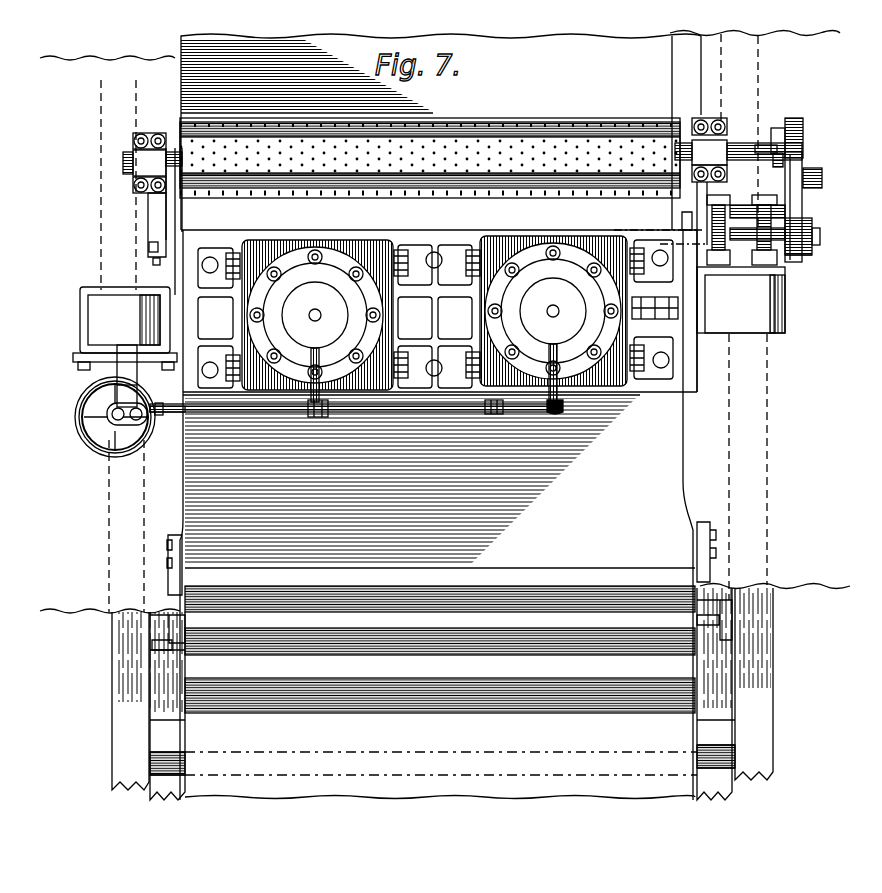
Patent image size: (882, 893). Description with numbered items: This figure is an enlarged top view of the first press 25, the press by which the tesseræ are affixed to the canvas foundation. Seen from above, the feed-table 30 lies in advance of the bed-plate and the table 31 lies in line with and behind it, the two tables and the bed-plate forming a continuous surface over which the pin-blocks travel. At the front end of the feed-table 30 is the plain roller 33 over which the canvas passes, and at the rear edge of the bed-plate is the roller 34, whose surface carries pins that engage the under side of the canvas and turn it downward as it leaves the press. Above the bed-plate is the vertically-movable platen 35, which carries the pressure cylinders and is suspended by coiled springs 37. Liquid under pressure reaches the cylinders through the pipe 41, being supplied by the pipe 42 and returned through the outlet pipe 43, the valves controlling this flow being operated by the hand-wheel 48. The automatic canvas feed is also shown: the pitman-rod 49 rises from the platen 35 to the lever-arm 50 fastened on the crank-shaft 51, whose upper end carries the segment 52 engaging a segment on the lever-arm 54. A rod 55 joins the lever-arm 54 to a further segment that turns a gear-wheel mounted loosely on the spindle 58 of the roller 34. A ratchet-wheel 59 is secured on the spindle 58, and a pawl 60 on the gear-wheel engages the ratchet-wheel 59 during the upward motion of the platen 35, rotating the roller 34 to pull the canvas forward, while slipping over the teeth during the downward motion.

The first press 25 is at (454, 635).
The feed-table 30 is at (410, 481).
The table 31 is at (430, 139).
The plain roller 33 is at (588, 578).
The roller 34 is at (576, 180).
The platen 35 is at (411, 234).
The coiled springs 37 is at (212, 254).
The pipe 41 is at (478, 412).
The pipe 42 is at (148, 432).
The pipe 43 is at (105, 420).
The hand-wheel 48 is at (113, 423).
The pitman-rod 49 is at (648, 318).
The lever-arm 50 is at (655, 283).
The crank-shaft 51 is at (814, 231).
The segment 52 is at (805, 257).
The lever-arm 54 is at (800, 196).
The rod 55 is at (821, 168).
The spindle 58 is at (744, 135).
The ratchet-wheel 59 is at (782, 128).
The pawl 60 is at (805, 124).